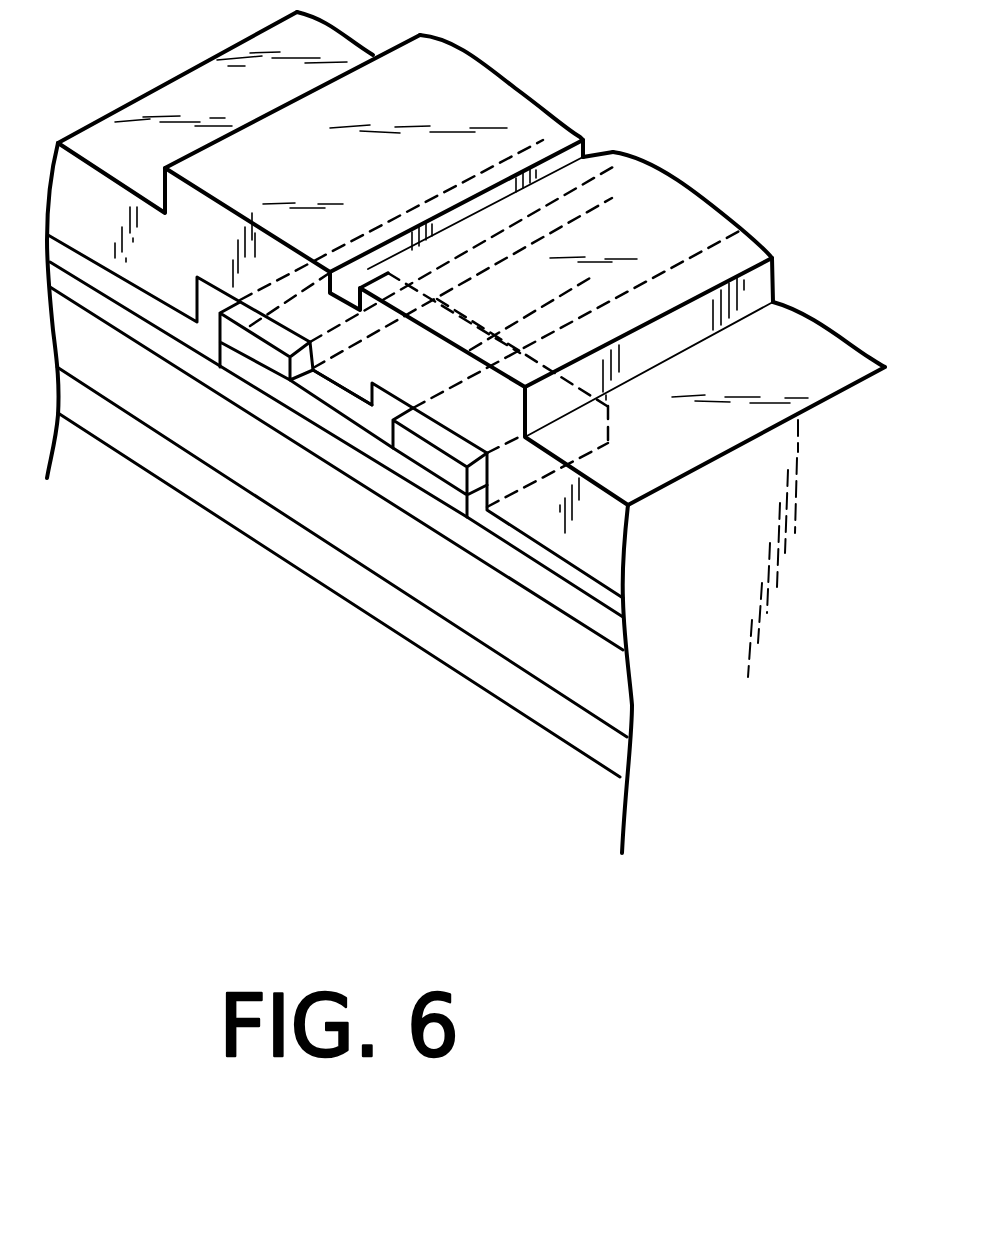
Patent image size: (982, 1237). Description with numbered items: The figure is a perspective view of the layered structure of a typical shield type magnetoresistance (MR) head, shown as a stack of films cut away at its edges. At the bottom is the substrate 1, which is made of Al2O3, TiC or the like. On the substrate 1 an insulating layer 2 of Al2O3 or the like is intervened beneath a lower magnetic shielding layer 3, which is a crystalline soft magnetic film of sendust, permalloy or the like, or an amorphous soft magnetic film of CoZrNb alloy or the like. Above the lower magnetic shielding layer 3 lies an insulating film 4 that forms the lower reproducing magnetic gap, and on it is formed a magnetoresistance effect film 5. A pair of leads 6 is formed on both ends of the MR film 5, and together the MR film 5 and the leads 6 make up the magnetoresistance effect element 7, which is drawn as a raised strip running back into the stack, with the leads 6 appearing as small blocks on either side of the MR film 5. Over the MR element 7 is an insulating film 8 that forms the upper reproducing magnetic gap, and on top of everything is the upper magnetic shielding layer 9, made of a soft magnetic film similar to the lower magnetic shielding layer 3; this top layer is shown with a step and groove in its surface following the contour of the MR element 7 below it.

The substrate 1 is at (600, 805).
The insulating layer 2 is at (612, 748).
The lower magnetic shielding layer 3 is at (612, 697).
The insulating film 4 is at (617, 635).
The magnetoresistance effect film 5 is at (330, 420).
The leads 6 is at (263, 352).
The magnetoresistance effect element 7 is at (419, 433).
The insulating film 8 is at (615, 602).
The upper magnetic shielding layer 9 is at (608, 543).